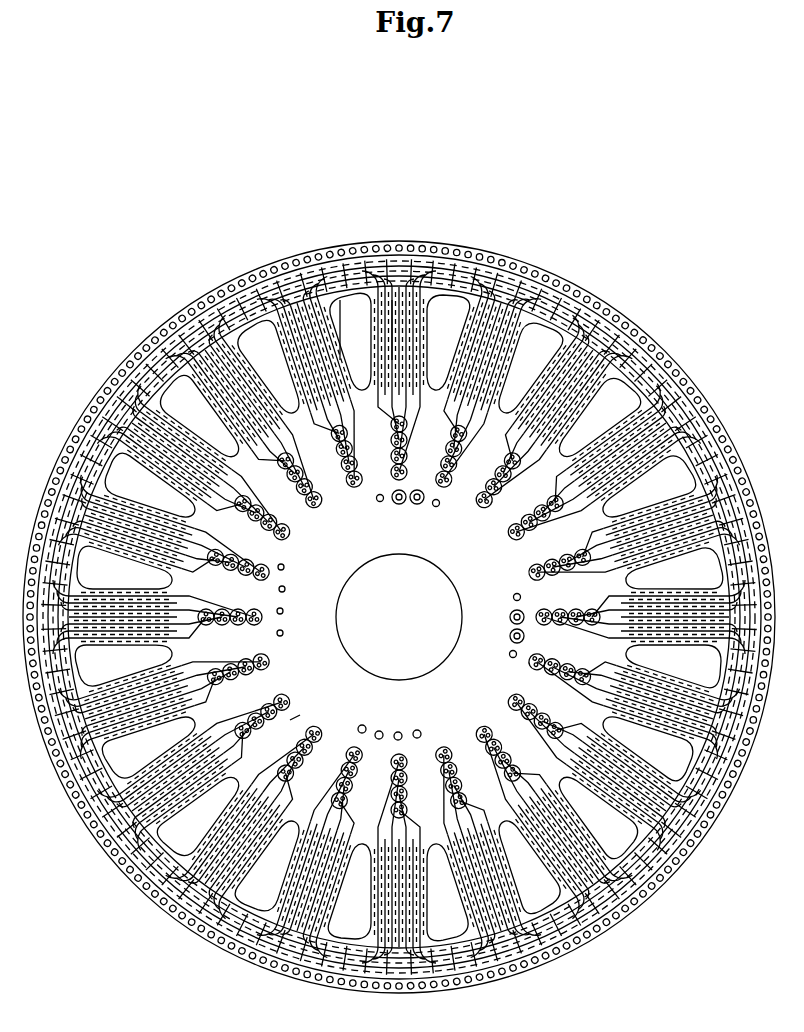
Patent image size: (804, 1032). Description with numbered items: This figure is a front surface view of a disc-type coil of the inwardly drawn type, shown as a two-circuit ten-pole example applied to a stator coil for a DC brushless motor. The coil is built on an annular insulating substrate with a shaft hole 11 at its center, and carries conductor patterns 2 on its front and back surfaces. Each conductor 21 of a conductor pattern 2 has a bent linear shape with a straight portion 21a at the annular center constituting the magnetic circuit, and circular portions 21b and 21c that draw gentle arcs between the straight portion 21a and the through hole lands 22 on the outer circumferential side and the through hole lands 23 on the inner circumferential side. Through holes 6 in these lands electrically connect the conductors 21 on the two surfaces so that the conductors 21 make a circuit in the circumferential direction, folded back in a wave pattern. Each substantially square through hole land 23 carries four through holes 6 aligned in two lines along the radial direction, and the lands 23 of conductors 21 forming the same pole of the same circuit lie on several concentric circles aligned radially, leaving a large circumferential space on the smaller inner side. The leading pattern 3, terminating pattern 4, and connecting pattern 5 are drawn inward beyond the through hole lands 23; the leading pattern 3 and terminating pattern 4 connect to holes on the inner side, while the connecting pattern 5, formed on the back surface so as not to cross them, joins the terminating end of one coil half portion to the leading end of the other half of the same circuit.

The conductor pattern 2 is at (528, 347).
The leading pattern 3 is at (380, 504).
The terminating pattern 4 is at (434, 508).
The connecting pattern 5 is at (377, 501).
The through hole 6 is at (330, 256).
The shaft hole 11 is at (386, 632).
The conductor 21 is at (243, 363).
The straight portion 21a is at (428, 328).
The circular portion 21b is at (348, 293).
The circular portion 21c is at (296, 717).
The through hole land on the outer circumferential side 22 is at (299, 250).
The through hole land on the inner circumferential side 23 is at (285, 539).